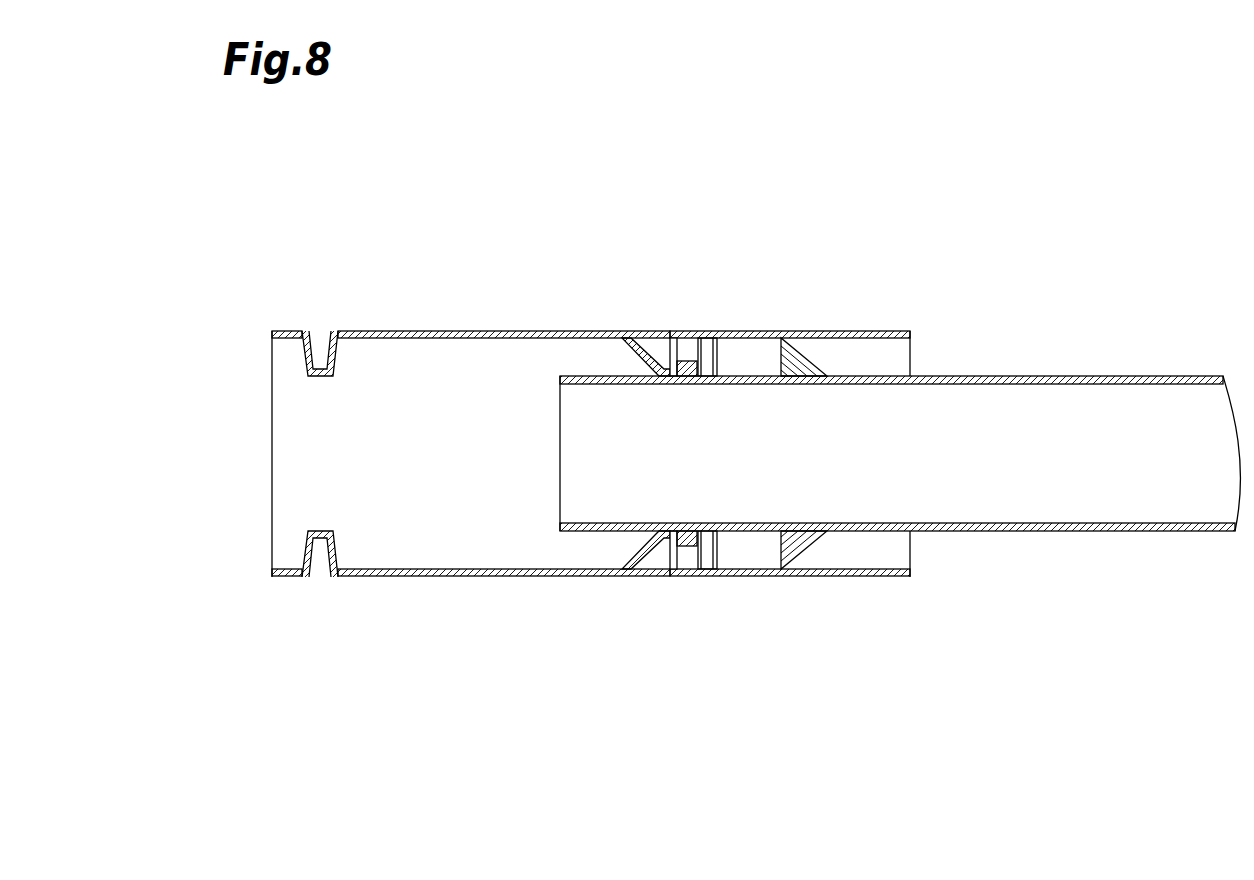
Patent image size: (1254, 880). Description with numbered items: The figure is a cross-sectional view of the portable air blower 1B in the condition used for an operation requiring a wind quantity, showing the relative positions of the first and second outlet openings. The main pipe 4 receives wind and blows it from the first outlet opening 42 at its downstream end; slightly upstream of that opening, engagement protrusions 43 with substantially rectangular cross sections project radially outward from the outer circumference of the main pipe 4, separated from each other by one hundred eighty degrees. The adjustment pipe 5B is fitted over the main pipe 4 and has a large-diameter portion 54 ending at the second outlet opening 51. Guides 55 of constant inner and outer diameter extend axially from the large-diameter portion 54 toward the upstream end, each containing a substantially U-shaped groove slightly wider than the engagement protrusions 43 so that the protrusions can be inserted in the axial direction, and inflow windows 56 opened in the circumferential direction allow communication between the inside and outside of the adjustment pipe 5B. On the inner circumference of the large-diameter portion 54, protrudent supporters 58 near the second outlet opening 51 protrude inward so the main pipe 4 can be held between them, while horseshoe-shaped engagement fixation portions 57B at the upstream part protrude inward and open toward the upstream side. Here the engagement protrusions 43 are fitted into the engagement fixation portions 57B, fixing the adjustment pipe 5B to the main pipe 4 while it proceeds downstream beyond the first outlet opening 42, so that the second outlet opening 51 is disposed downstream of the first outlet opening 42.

The portable air blower 1B is at (1118, 162).
The adjustment pipe 5B is at (615, 672).
The main pipe 4 is at (1158, 532).
The first outlet opening 42 is at (569, 528).
The engagement protrusion 43 is at (688, 362).
The second outlet opening 51 is at (278, 567).
The large-diameter portion 54 is at (466, 331).
The guide 55 is at (880, 331).
The inflow window 56 is at (808, 352).
The engagement fixation portion 57B is at (726, 356).
The protrudent supporter 58 is at (307, 362).